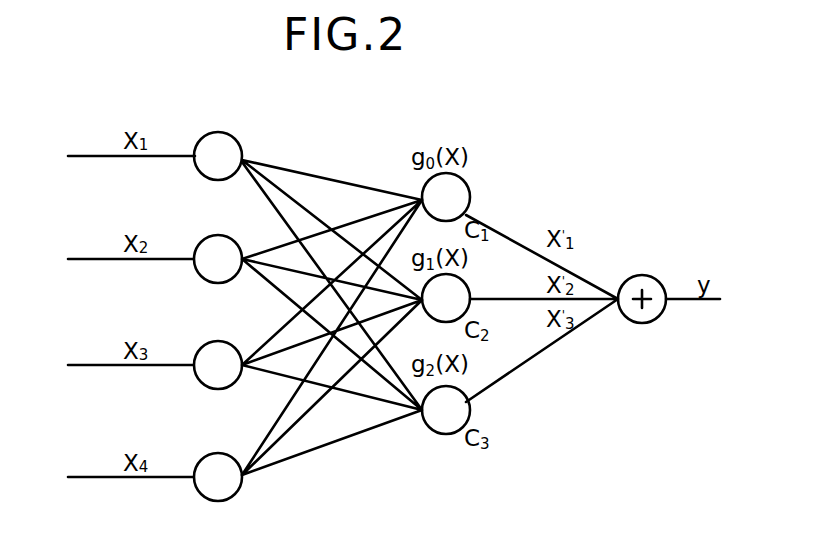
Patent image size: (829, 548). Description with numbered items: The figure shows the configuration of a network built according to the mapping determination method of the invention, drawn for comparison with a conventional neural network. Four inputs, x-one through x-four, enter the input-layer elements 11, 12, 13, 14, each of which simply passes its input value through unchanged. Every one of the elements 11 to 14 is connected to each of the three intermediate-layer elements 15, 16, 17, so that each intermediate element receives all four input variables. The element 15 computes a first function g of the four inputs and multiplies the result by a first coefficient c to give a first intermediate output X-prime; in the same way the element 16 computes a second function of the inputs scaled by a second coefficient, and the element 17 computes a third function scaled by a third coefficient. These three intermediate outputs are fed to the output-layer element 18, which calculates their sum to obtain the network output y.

The input-layer element 11 is at (218, 133).
The input-layer element 12 is at (228, 236).
The input-layer element 13 is at (223, 341).
The input-layer element 14 is at (219, 453).
The intermediate-layer element 15 is at (470, 190).
The intermediate-layer element 16 is at (470, 290).
The intermediate-layer element 17 is at (470, 412).
The output-layer element 18 is at (653, 277).